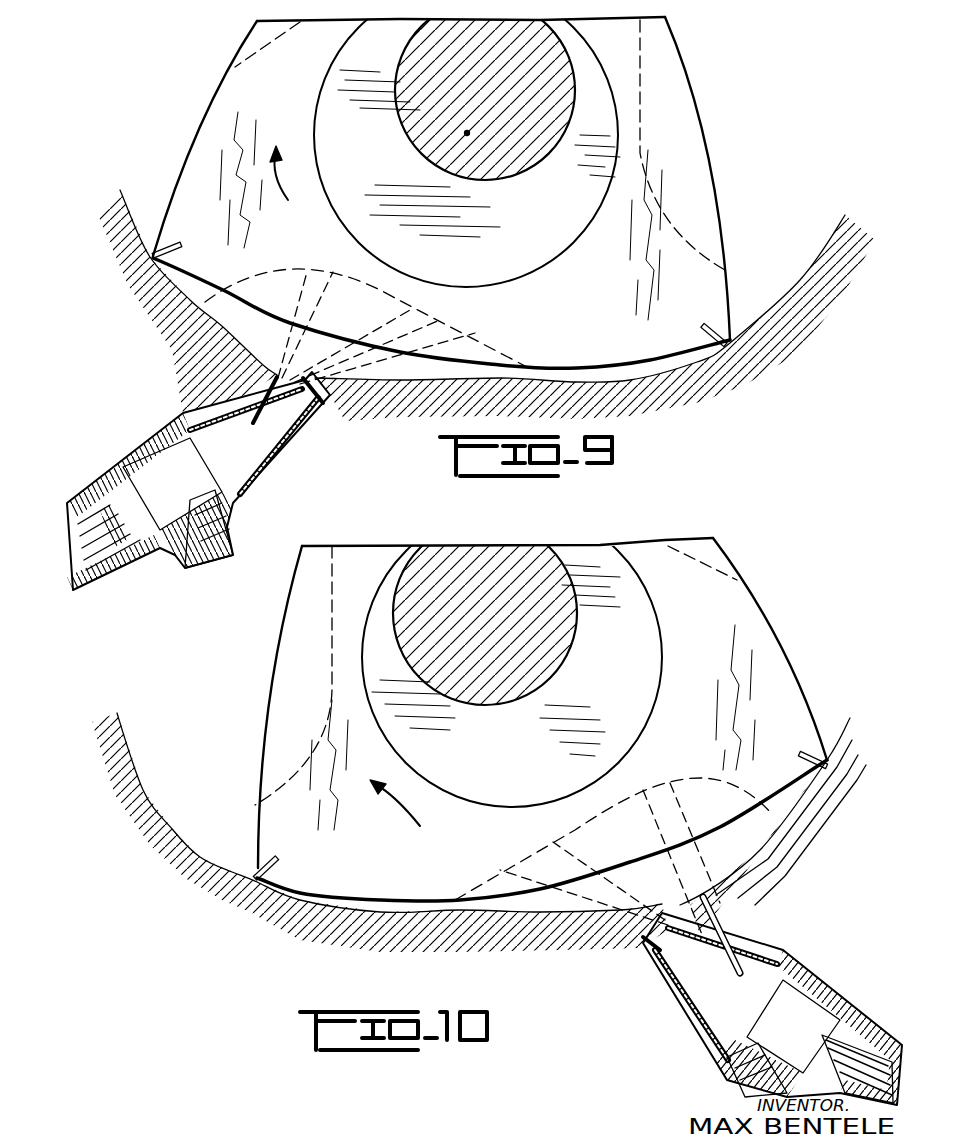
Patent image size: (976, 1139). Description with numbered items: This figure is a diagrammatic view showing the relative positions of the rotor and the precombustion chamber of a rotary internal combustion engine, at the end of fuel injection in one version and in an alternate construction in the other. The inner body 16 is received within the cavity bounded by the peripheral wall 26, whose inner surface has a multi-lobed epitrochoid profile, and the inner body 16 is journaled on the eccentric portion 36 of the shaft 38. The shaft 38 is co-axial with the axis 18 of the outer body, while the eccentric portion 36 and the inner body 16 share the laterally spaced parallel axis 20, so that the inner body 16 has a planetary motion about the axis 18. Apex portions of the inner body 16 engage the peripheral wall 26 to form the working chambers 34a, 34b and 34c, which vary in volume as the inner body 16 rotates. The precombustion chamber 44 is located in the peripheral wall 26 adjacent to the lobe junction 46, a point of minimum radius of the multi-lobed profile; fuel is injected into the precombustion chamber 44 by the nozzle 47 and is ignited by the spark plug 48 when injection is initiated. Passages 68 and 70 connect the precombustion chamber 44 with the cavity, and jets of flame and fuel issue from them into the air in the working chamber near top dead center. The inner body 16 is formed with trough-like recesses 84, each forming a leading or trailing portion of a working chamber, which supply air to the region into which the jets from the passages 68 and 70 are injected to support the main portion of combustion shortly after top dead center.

In FIG. 9, the inner body 16 is at (700, 120).
In FIG. 10, the inner body 16 is at (775, 628).
In FIG. 9, the axis 18 is at (485, 88).
In FIG. 10, the axis 18 is at (483, 610).
In FIG. 9, the axis 20 is at (467, 133).
In FIG. 10, the axis 20 is at (512, 655).
In FIG. 9, the peripheral wall 26 is at (632, 382).
In FIG. 10, the peripheral wall 26 is at (387, 912).
In FIG. 9, the working chamber 34a is at (590, 373).
In FIG. 10, the working chamber 34a is at (655, 862).
In FIG. 9, the working chamber 34b is at (160, 174).
In FIG. 10, the working chamber 34b is at (200, 751).
In FIG. 9, the working chamber 34c is at (790, 216).
In FIG. 10, the working chamber 34c is at (855, 701).
In FIG. 9, the eccentric portion 36 is at (515, 229).
In FIG. 10, the eccentric portion 36 is at (505, 756).
In FIG. 9, the shaft 38 is at (518, 172).
In FIG. 10, the shaft 38 is at (565, 660).
In FIG. 9, the precombustion chamber 44 is at (236, 456).
In FIG. 10, the precombustion chamber 44 is at (760, 1006).
In FIG. 9, the lobe junction 46 is at (503, 378).
In FIG. 10, the lobe junction 46 is at (447, 905).
In FIG. 9, the nozzle 47 is at (100, 572).
In FIG. 10, the nozzle 47 is at (873, 1058).
In FIG. 9, the spark plug 48 is at (210, 560).
In FIG. 10, the spark plug 48 is at (735, 1068).
In FIG. 9, the passage 68 is at (270, 368).
In FIG. 10, the passage 68 is at (716, 885).
In FIG. 9, the passage 70 is at (327, 388).
In FIG. 10, the passage 70 is at (622, 932).
In FIG. 9, the trough-like recess 84 is at (277, 270).
In FIG. 10, the trough-like recess 84 is at (322, 715).